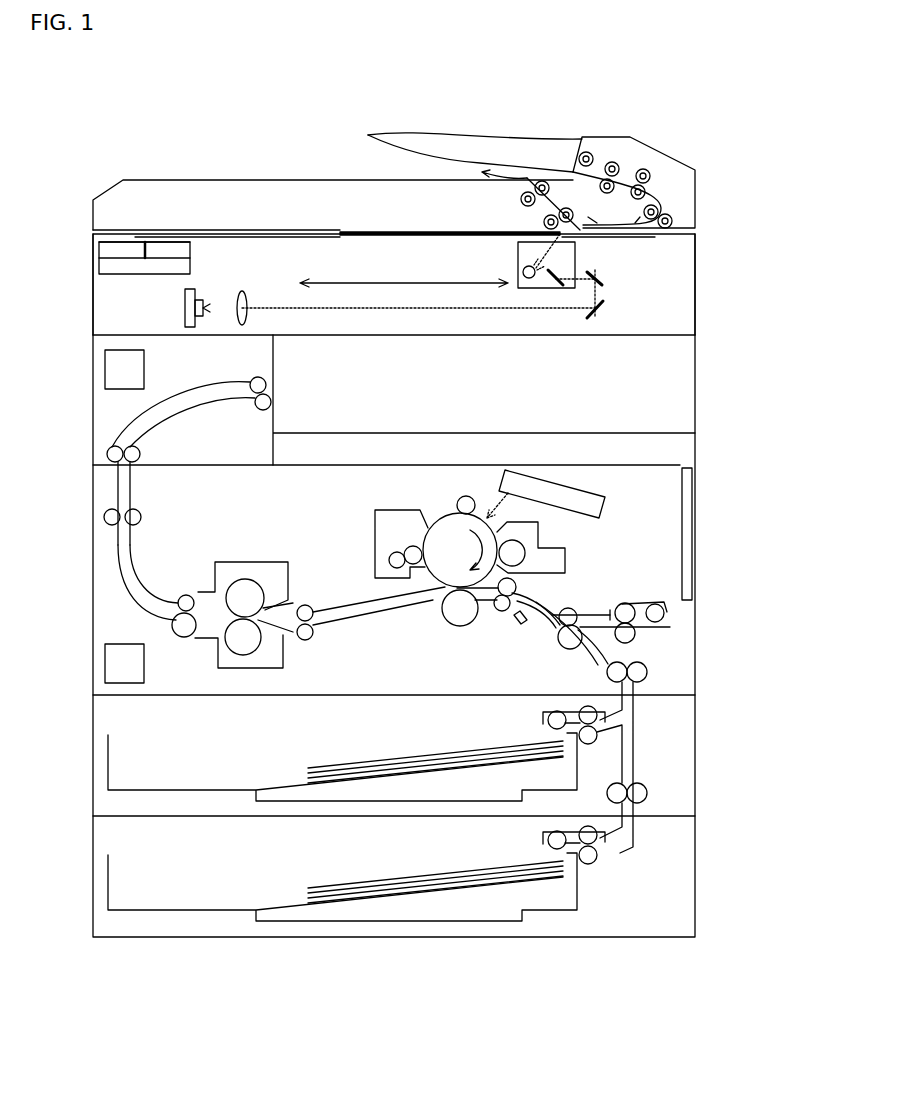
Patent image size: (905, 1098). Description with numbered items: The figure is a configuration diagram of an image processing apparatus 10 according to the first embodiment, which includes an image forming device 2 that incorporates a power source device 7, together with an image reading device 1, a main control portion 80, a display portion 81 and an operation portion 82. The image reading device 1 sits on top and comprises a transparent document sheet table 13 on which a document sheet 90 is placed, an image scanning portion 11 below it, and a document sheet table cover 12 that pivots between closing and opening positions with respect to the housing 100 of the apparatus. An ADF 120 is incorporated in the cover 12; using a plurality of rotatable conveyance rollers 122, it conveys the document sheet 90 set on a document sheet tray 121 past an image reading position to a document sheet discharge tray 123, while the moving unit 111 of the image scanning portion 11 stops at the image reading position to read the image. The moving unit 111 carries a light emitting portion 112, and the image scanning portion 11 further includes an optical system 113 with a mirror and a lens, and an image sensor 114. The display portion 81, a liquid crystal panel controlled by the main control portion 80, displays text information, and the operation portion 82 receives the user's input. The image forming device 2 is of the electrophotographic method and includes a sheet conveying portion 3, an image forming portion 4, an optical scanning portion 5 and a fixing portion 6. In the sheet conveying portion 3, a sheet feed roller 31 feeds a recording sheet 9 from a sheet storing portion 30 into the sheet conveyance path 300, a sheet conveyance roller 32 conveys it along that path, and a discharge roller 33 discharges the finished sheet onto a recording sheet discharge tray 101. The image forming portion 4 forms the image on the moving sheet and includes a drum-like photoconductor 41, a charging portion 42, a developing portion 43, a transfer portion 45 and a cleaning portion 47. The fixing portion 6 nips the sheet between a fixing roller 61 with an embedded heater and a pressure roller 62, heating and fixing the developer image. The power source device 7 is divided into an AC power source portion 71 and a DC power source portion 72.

The image processing apparatus 10 is at (80, 132).
The image reading device 1 is at (451, 236).
The image scanning portion 11 is at (697, 300).
The document sheet table cover 12 is at (697, 209).
The document sheet table 13 is at (584, 238).
The ADF (Auto Document Feeder) 120 is at (572, 165).
The document sheet tray 121 is at (512, 140).
The conveyance rollers 122 is at (612, 162).
The document sheet discharge tray 123 is at (258, 180).
The document sheet 90 is at (350, 232).
The main control portion 80 is at (146, 257).
The display portion 81 is at (99, 248).
The operation portion 82 is at (192, 250).
The moving unit 111 is at (476, 285).
The light emitting portion 112 is at (518, 270).
The optical system 113 is at (587, 310).
The image sensor 114 is at (185, 315).
The recording sheet discharge tray 101 is at (496, 433).
The power source device 7 is at (86, 516).
The DC power source portion 72 is at (105, 367).
The AC power source portion 71 is at (105, 660).
The discharge roller 33 is at (253, 380).
The housing 100 is at (93, 518).
The fixing portion 6 is at (255, 594).
The fixing roller 61 is at (228, 586).
The pressure roller 62 is at (263, 650).
The image forming portion 4 is at (475, 571).
The photoconductor 41 is at (442, 515).
The charging portion 42 is at (488, 490).
The developing portion 43 is at (540, 532).
The cleaning portion 47 is at (396, 510).
The transfer portion 45 is at (458, 627).
The optical scanning portion 5 is at (608, 512).
The sheet conveyance path 300 is at (522, 626).
The image forming device 2 is at (710, 514).
The sheet conveying portion 3 is at (384, 761).
The sheet storing portion 30 is at (309, 806).
The recording sheet 9 is at (376, 756).
The sheet feed roller 31 is at (603, 748).
The sheet conveyance roller 32 is at (646, 678).